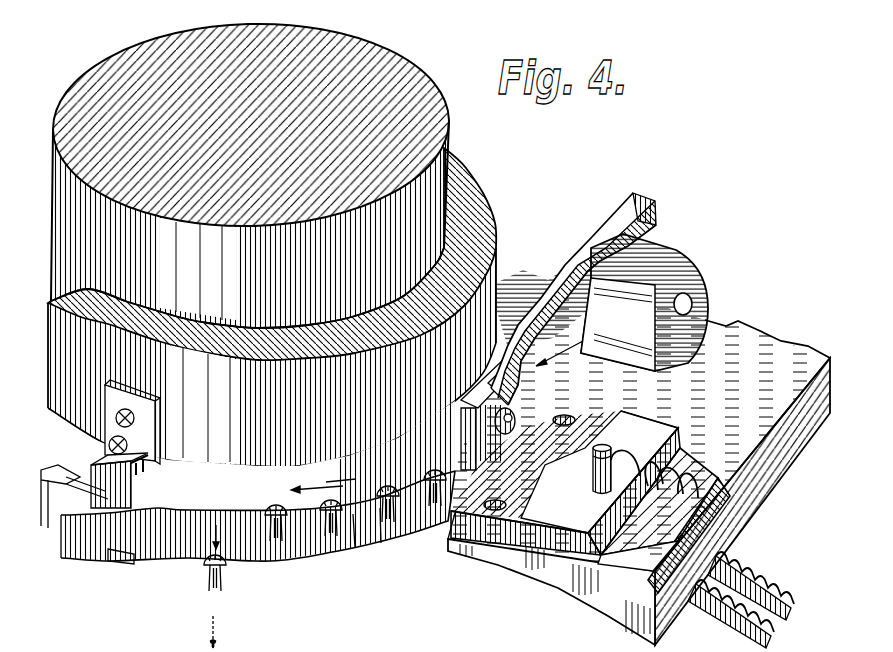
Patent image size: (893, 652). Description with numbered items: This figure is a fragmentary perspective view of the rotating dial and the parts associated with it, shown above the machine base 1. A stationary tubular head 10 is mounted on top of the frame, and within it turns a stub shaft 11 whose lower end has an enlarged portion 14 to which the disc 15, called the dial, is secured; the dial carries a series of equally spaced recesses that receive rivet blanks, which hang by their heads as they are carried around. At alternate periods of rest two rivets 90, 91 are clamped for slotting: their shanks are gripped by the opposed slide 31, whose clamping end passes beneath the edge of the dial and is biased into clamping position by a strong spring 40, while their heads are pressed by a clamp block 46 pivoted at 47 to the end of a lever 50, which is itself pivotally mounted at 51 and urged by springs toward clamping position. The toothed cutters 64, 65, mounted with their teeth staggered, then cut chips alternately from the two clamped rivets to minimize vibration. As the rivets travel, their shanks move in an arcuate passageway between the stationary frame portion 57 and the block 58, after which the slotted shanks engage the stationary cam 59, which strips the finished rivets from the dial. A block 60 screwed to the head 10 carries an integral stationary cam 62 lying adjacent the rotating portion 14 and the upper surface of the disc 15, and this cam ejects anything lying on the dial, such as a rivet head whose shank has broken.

The base plate 1 is at (757, 333).
The stationary tubular head 10 is at (487, 223).
The stub shaft 11 is at (437, 113).
The enlarged portion 14 is at (258, 458).
The disc 15 is at (215, 506).
The slide 31 is at (664, 520).
The spring 40 is at (665, 467).
The clamp block 46 is at (520, 462).
The pivot 47 is at (501, 418).
The lever 50 is at (548, 273).
The pivot mounting 51 is at (686, 301).
The stationary frame portion 57 is at (362, 524).
The block 58 is at (565, 483).
The stationary cam 59 is at (114, 553).
The block 60 is at (150, 433).
The stationary cam 62 is at (103, 485).
The toothed cutter 64 is at (722, 614).
The toothed cutter 65 is at (758, 580).
The clamped rivet 90 is at (386, 520).
The clamped rivet 91 is at (410, 532).